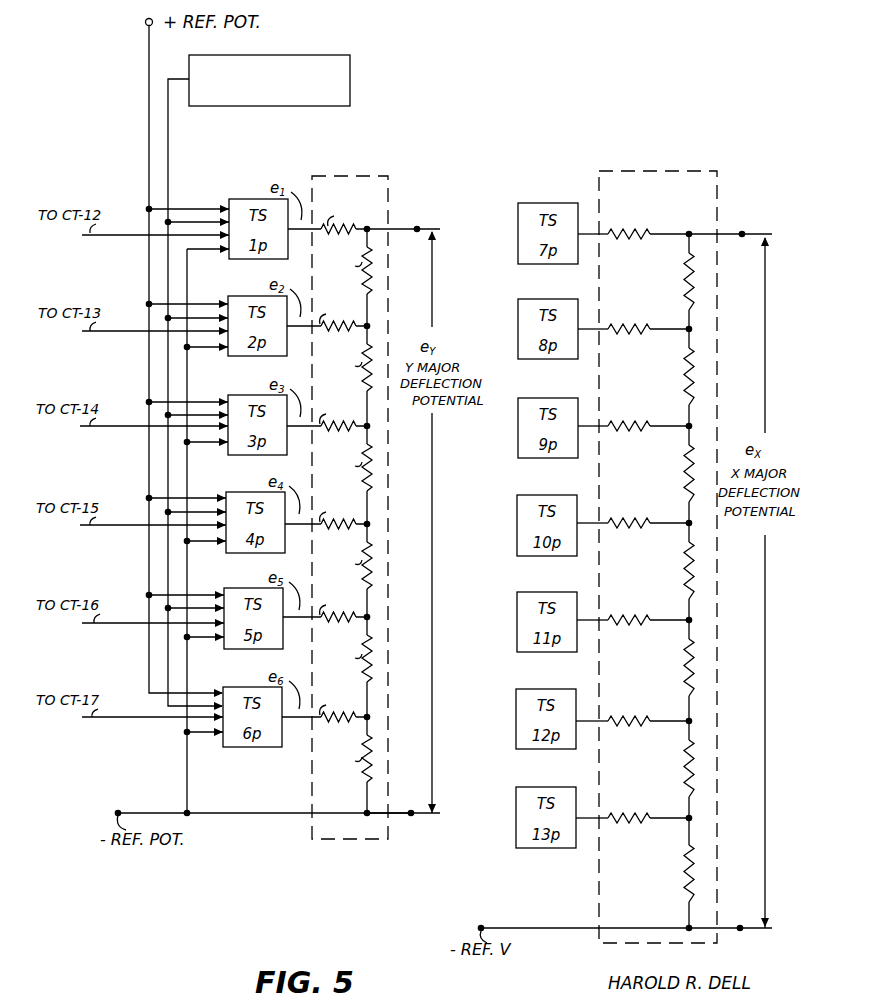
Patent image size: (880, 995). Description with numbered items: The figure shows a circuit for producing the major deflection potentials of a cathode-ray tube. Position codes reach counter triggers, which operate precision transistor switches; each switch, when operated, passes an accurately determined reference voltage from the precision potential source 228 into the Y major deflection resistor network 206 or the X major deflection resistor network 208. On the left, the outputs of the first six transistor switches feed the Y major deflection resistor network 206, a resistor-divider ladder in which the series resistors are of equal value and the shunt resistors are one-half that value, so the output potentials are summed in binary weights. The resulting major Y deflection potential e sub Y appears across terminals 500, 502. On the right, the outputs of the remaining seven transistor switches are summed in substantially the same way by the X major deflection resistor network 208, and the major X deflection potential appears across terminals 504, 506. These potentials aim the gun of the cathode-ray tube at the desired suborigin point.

The precision potential source 228 is at (284, 55).
The Y major deflection resistor network 206 is at (345, 176).
The X major deflection resistor network 208 is at (688, 171).
The Y major deflection output terminal 502 is at (416, 228).
The negative reference potential terminal 500 is at (411, 816).
The X major deflection output terminal 506 is at (755, 220).
The negative reference voltage terminal 504 is at (741, 931).